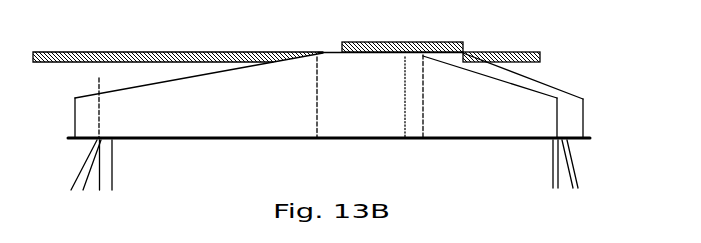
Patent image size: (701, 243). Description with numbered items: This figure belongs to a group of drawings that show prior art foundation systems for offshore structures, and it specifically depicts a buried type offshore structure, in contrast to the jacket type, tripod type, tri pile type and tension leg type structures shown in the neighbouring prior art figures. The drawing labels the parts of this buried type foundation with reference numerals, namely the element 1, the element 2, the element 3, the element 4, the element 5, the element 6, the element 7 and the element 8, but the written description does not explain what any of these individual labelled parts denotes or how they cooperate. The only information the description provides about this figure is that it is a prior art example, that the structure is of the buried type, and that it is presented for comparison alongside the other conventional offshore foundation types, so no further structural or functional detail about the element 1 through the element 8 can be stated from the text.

The electronic device / mounting assembly 1 is at (338, 69).
The inclined plate 2 is at (533, 92).
The support legs 3 is at (134, 178).
The vertical leg 4 is at (112, 165).
The inclined leg 5 is at (82, 159).
The raised mounting member 6 is at (426, 38).
The surface layer 7 is at (138, 68).
The inclined top surface 8 is at (210, 83).